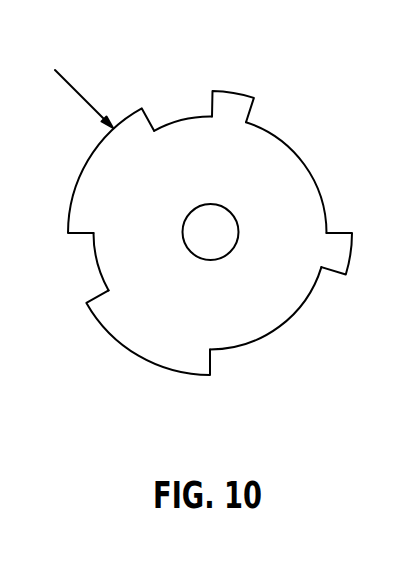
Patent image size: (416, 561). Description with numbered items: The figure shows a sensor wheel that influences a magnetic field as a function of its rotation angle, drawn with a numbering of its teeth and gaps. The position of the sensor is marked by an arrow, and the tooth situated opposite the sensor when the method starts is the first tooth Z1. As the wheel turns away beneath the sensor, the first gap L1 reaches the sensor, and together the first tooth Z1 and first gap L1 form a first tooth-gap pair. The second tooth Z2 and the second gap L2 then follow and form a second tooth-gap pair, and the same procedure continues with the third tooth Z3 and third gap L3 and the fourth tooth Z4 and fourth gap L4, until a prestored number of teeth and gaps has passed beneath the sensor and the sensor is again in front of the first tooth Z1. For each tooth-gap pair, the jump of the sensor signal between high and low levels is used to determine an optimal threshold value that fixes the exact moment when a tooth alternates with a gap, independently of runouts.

The first tooth Z1 is at (90, 176).
The second tooth Z2 is at (232, 98).
The third tooth Z3 is at (342, 252).
The fourth tooth Z4 is at (135, 343).
The first gap L1 is at (175, 108).
The second gap L2 is at (315, 158).
The third gap L3 is at (290, 330).
The fourth gap L4 is at (88, 265).